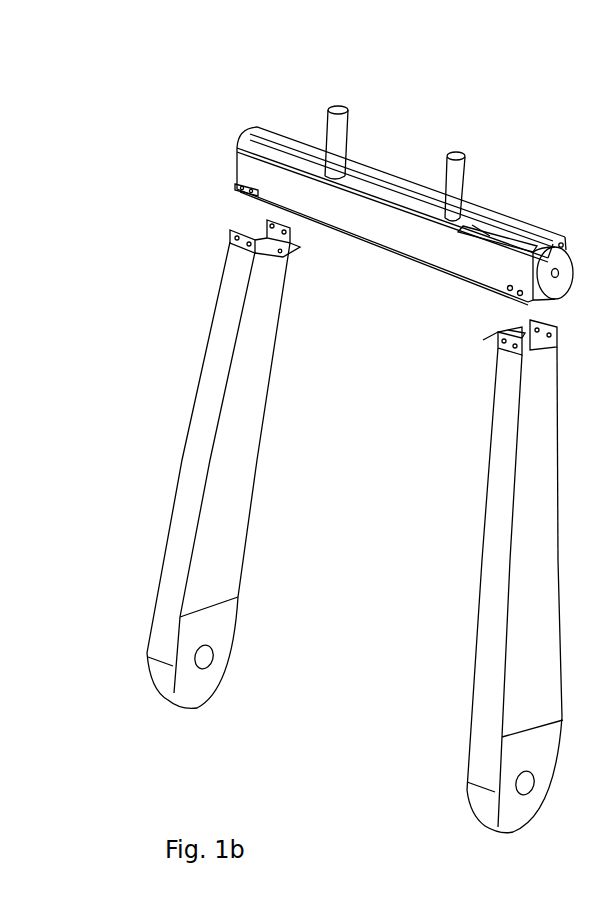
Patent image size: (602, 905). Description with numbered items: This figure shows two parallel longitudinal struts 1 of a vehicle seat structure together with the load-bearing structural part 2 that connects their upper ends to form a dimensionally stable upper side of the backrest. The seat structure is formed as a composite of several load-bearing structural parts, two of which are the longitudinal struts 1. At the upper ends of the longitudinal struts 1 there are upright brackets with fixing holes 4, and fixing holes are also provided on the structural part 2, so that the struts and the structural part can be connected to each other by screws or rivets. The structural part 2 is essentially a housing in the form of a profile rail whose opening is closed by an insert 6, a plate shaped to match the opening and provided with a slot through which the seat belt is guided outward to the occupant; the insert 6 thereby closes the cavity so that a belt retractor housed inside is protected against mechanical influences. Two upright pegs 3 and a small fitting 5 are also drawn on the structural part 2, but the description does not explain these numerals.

The longitudinal struts 1 is at (499, 473).
The load-bearing structural part 2 is at (403, 178).
The pegs 3 is at (343, 123).
The fixing holes 4 is at (232, 237).
The fastening bracket 5 is at (235, 187).
The insert 6 is at (287, 148).